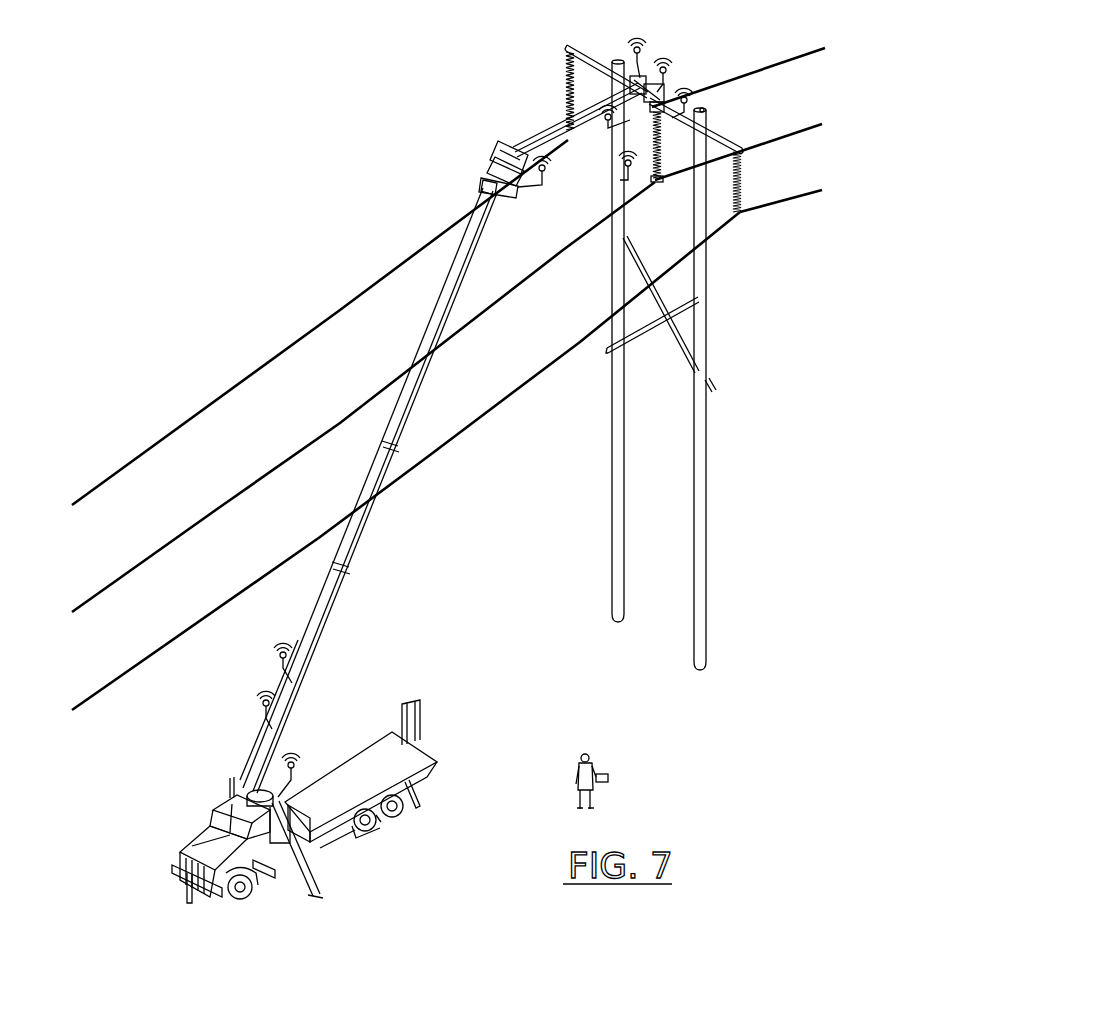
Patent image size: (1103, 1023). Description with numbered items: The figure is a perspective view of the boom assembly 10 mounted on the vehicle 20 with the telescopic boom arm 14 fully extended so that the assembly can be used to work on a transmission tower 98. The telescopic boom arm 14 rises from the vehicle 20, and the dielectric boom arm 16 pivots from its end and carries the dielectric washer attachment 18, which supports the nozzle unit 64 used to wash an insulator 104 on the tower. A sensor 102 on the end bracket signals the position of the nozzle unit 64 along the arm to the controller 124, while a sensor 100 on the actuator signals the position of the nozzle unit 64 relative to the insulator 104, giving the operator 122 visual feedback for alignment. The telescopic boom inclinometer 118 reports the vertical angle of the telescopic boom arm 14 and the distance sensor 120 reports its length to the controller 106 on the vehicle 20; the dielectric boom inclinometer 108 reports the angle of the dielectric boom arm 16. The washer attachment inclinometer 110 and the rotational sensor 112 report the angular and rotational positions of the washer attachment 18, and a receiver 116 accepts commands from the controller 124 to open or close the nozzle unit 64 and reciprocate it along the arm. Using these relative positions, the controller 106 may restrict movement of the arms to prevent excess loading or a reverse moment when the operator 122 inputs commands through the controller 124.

The boom assembly 10 is at (400, 527).
The telescopic boom arm 14 is at (323, 490).
The dielectric boom arm 16 is at (545, 140).
The dielectric washer attachment 18 is at (645, 132).
The vehicle 20 is at (282, 801).
The nozzle unit 64 is at (668, 112).
The transmission tower 98 is at (669, 349).
The sensor 100 is at (702, 110).
The sensor 102 is at (620, 240).
The insulator 104 is at (660, 168).
The controller 106 is at (278, 800).
The dielectric boom inclinometer 108 is at (523, 188).
The washer attachment inclinometer 110 is at (633, 78).
The rotational sensor 112 is at (662, 96).
The receiver 116 is at (637, 113).
The telescopic boom inclinometer 118 is at (270, 729).
The distance sensor 120 is at (290, 683).
The operator 122 is at (586, 754).
The controller 124 is at (608, 776).